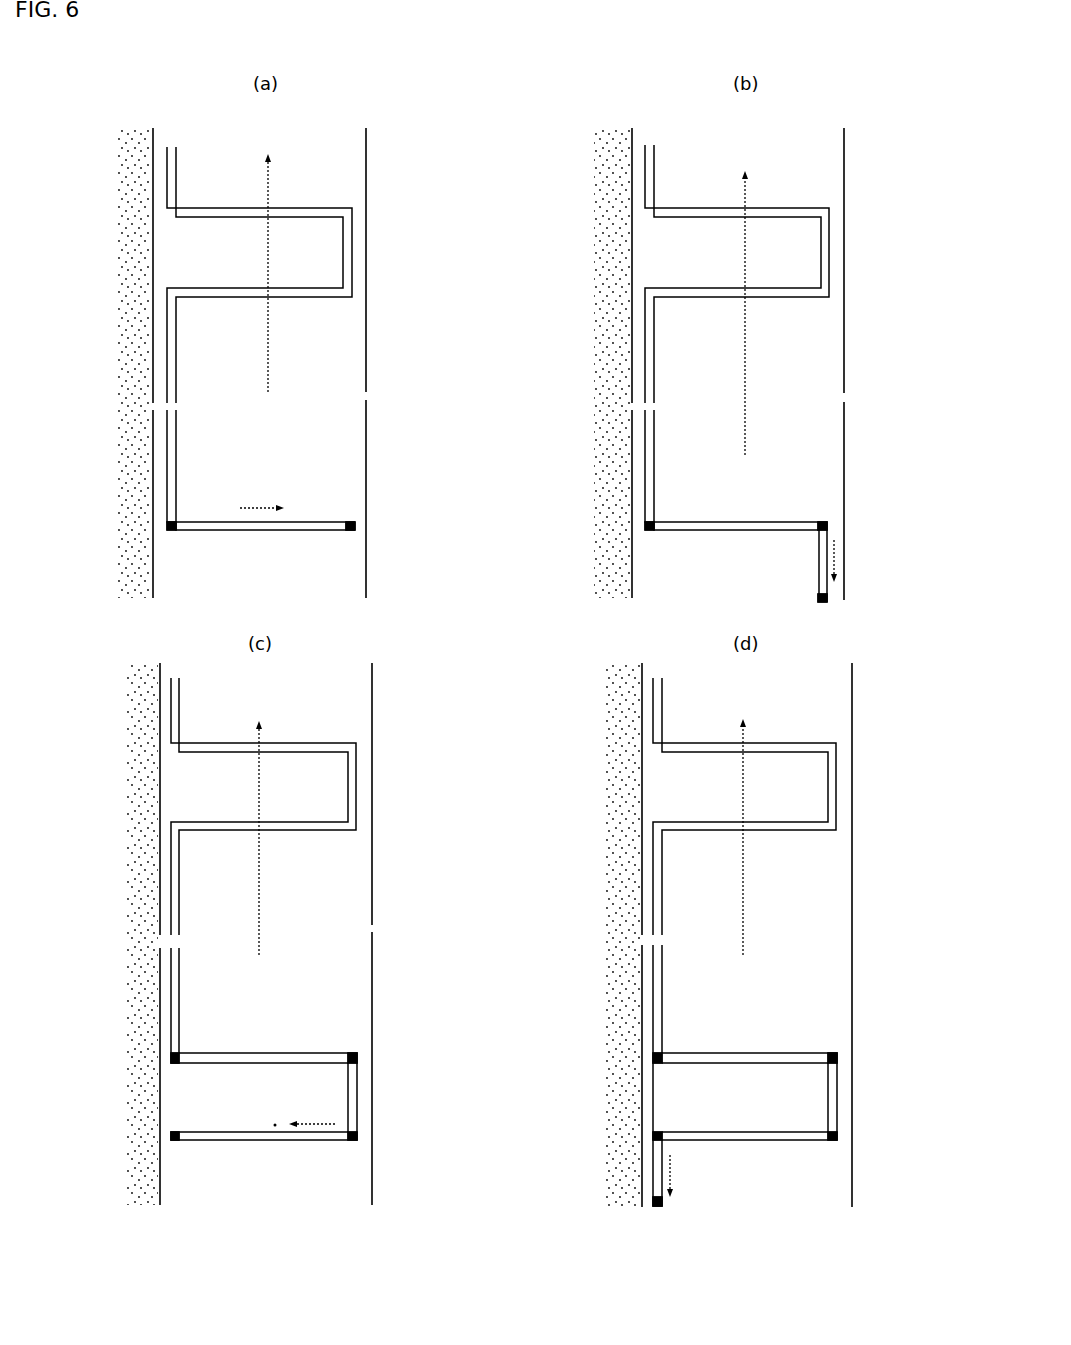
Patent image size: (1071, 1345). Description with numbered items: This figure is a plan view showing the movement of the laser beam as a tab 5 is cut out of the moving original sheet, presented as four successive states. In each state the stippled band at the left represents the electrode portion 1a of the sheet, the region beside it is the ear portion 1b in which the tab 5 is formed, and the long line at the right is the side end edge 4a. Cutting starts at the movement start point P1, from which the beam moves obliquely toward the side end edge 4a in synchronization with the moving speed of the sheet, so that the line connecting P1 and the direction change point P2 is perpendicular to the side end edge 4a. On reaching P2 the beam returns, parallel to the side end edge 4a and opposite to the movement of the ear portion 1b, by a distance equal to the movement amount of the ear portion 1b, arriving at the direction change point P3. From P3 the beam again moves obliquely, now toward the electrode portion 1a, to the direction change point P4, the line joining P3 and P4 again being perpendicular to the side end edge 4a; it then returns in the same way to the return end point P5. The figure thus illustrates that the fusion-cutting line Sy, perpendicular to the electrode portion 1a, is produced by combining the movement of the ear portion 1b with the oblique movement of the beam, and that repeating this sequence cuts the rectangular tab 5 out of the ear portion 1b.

The electrode portion 1a is at (122, 378).
The ear portion 1b is at (347, 171).
The side end edge 4a is at (367, 346).
The tab 5 is at (337, 247).
The fusion-cutting line Sy is at (315, 287).
The movement start point P1 is at (172, 522).
The direction change point P2 is at (350, 522).
The direction change point P3 is at (832, 599).
The direction change point P4 is at (178, 1132).
The return end point P5 is at (655, 1208).